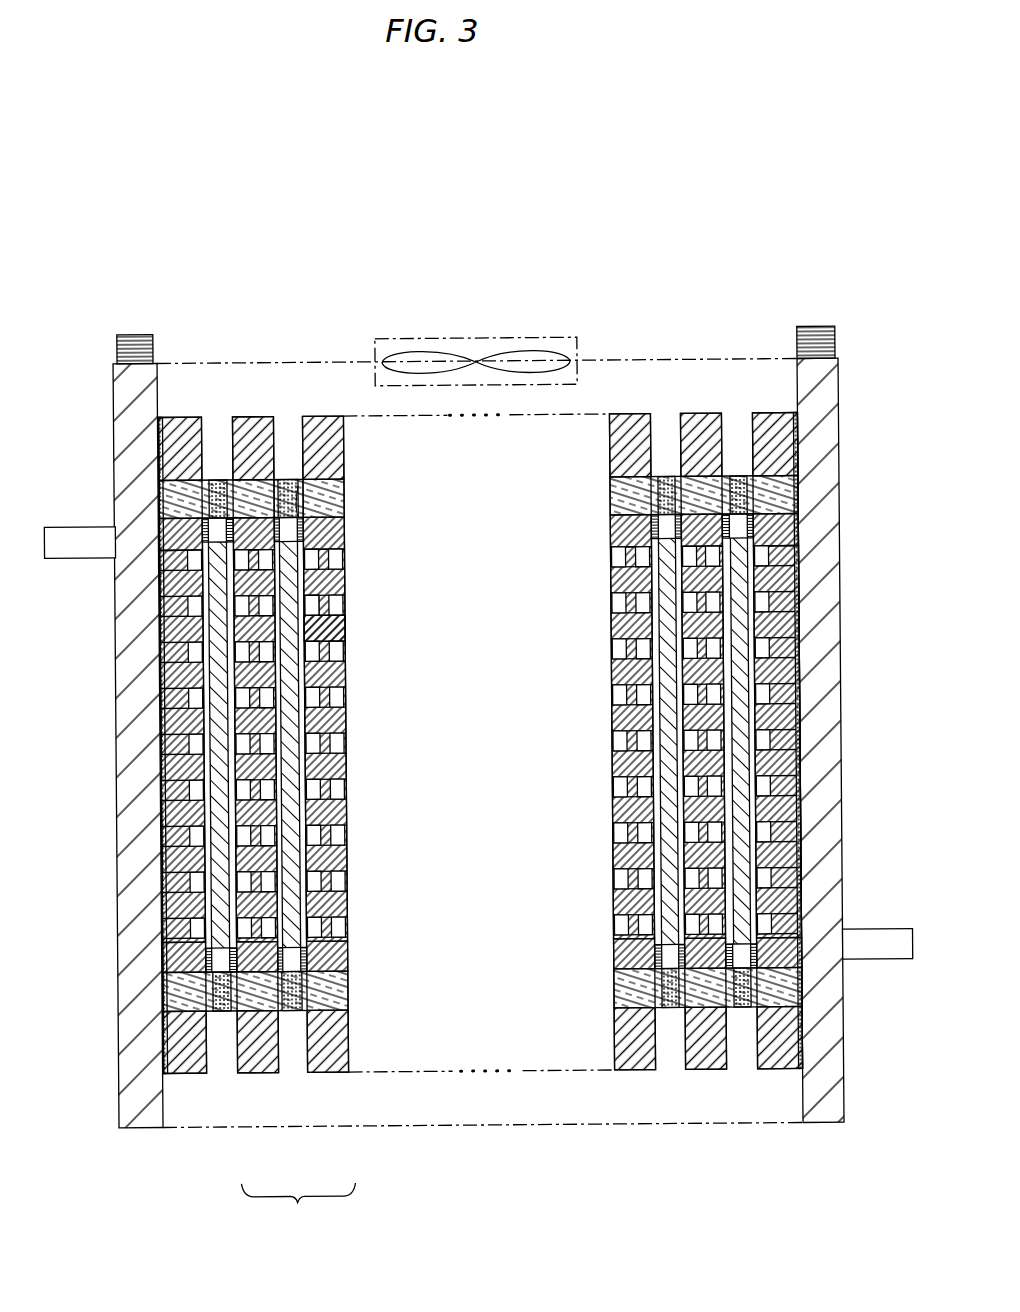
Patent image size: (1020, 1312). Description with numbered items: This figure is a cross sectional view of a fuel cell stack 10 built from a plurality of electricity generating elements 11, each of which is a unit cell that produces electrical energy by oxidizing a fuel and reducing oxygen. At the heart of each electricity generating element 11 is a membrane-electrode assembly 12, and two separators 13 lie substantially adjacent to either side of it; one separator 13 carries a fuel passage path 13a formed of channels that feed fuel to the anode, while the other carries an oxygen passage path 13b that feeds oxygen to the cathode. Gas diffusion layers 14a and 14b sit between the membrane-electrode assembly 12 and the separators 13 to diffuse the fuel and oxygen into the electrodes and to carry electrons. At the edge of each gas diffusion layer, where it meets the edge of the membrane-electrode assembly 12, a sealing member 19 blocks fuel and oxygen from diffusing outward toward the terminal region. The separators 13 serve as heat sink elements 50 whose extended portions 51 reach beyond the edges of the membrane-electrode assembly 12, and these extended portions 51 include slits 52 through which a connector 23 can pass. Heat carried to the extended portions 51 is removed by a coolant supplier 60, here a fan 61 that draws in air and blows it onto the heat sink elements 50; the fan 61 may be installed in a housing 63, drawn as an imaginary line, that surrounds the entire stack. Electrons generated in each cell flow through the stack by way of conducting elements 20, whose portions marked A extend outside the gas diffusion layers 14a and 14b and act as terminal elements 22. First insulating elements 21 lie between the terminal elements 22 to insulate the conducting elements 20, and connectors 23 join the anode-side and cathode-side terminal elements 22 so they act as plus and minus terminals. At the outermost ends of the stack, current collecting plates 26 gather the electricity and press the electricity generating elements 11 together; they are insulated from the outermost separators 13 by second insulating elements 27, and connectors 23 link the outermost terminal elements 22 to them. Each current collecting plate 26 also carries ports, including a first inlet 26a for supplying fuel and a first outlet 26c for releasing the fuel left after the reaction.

The fuel cell stack 10 is at (480, 298).
The electricity generating element 11 is at (298, 1206).
The membrane-electrode assembly 12 is at (288, 1010).
The separator 13 is at (257, 1082).
The fuel passage path 13a is at (270, 797).
The oxygen passage path 13b is at (354, 744).
The gas diffusion layer 14a is at (282, 633).
The gas diffusion layer 14b is at (307, 605).
The sealing member 19 is at (200, 540).
The conducting element 20 is at (312, 499).
The first insulating element 21 is at (198, 478).
The terminal element 22 is at (289, 500).
The connector 23 is at (196, 494).
The current collecting plate 26 is at (840, 805).
The first inlet 26a is at (80, 524).
The first outlet 26c is at (876, 963).
The second insulating element 27 is at (800, 695).
The heat sink element 50 is at (352, 457).
The extended portion 51 is at (286, 458).
The slit 52 is at (229, 478).
The coolant supplier 60 is at (481, 324).
The fan 61 is at (408, 357).
The housing 63 is at (647, 361).
The extended portion of conducting element A is at (300, 486).